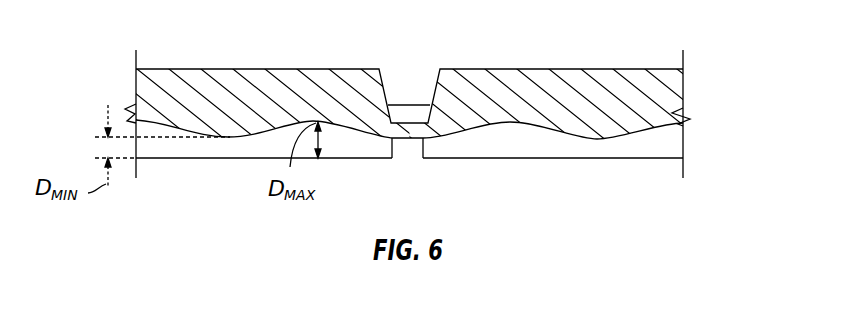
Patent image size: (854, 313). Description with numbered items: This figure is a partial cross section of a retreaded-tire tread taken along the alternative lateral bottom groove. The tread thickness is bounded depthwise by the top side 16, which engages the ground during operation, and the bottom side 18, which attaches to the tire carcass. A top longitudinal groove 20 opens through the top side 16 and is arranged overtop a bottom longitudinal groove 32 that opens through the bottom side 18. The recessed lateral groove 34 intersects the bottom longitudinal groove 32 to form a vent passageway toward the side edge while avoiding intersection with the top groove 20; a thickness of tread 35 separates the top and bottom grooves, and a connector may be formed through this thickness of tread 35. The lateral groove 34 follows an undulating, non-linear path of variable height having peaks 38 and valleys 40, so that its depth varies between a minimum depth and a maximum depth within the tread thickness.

The top side 16 is at (505, 70).
The bottom side 18 is at (597, 160).
The top longitudinal groove 20 is at (407, 80).
The bottom longitudinal groove 32 is at (408, 152).
The recessed lateral groove 34 is at (505, 146).
The thickness of tread 35 is at (408, 127).
The peaks 38 is at (228, 139).
The valleys 40 is at (372, 146).